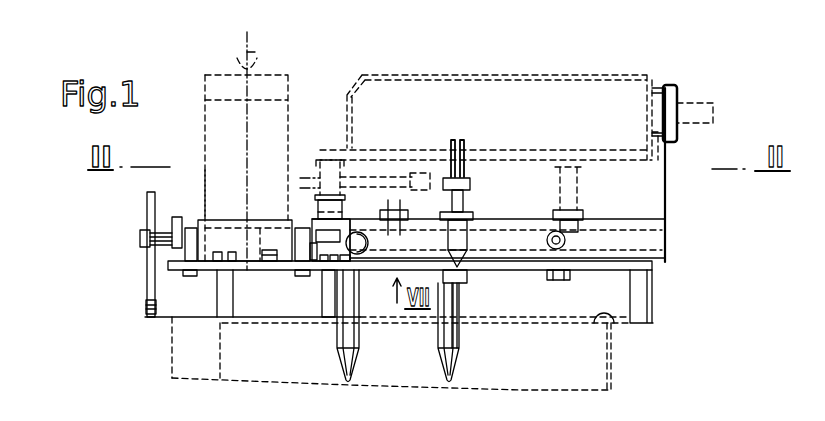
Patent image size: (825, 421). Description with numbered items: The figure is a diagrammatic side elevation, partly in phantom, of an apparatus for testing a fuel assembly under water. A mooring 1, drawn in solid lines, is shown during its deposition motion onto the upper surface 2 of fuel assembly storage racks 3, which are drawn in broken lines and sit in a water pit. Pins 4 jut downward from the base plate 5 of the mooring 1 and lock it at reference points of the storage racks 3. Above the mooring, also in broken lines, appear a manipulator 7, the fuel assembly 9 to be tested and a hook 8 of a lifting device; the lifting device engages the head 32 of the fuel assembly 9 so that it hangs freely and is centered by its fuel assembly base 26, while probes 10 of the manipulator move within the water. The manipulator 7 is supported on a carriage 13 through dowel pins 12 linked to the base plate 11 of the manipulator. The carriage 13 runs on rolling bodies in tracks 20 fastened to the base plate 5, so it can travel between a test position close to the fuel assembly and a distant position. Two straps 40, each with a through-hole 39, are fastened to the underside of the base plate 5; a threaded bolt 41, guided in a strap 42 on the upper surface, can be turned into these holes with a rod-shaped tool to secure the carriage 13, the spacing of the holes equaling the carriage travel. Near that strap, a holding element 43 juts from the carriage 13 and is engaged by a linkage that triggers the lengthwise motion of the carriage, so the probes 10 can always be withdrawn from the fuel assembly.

The mooring 1 is at (674, 217).
The upper surface 2 is at (609, 325).
The fuel assembly storage racks 3 is at (612, 378).
The pins 4 is at (445, 343).
The base plate 5 is at (653, 266).
The manipulator 7 is at (682, 93).
The hook 8 is at (253, 51).
The fuel assembly 9 is at (213, 148).
The probes 10 is at (210, 184).
The base plate of the manipulator 11 is at (622, 158).
The dowel pins 12 is at (575, 193).
The carriage 13 is at (507, 222).
The tracks 20 is at (638, 228).
The fuel assembly base 26 is at (212, 232).
The head 32 is at (213, 88).
The through-hole 39 is at (567, 280).
The straps 40 is at (467, 276).
The threaded bolt 41 is at (462, 172).
The strap 42 is at (470, 208).
The holding element 43 is at (380, 216).